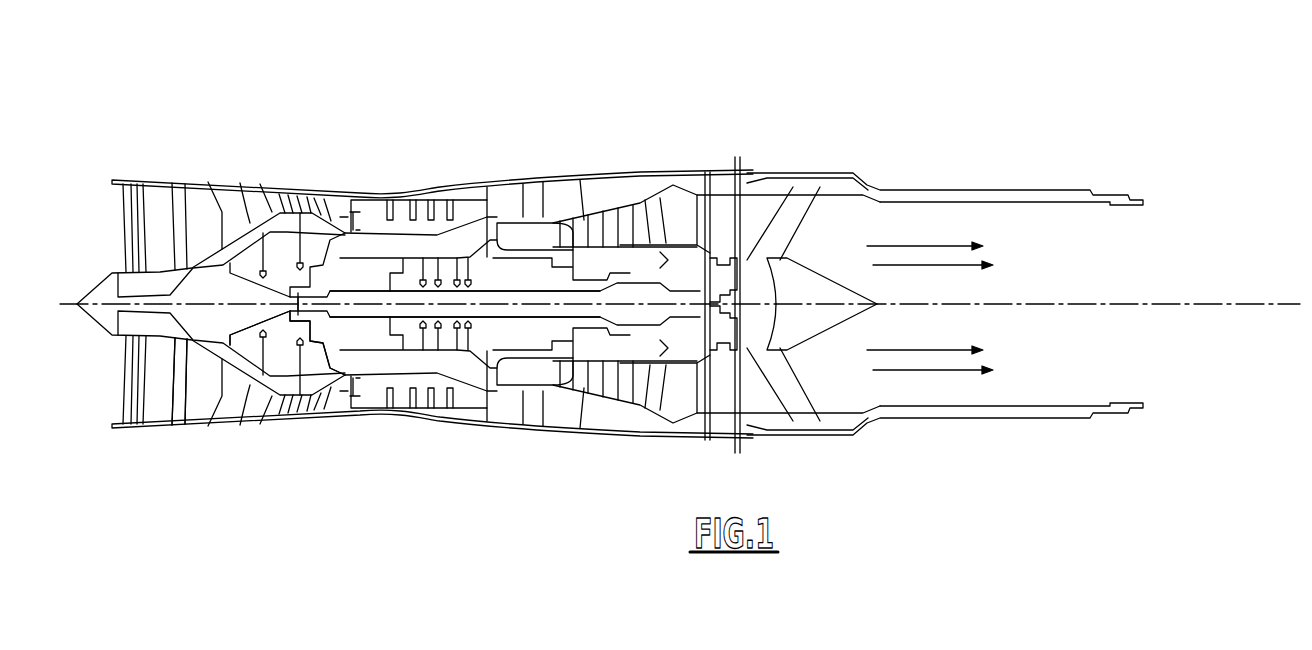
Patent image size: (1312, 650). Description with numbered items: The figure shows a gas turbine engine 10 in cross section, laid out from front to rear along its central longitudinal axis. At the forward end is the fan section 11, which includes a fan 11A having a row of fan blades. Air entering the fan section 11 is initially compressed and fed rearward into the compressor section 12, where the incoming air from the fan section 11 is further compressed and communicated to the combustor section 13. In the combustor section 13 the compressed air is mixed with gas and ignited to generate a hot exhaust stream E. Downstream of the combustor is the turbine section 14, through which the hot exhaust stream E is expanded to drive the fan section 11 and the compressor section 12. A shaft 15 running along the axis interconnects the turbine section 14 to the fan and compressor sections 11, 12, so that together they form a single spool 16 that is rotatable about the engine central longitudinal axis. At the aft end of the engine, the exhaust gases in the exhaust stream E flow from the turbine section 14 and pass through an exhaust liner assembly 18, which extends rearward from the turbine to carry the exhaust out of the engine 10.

The gas turbine engine 10 is at (861, 58).
The fan section 11 is at (332, 112).
The fan 11A is at (206, 402).
The compressor section 12 is at (505, 112).
The combustor section 13 is at (592, 111).
The turbine section 14 is at (760, 111).
The shaft 15 is at (364, 258).
The single spool 16 is at (334, 330).
The exhaust liner assembly 18 is at (765, 111).
The hot exhaust stream E is at (940, 381).